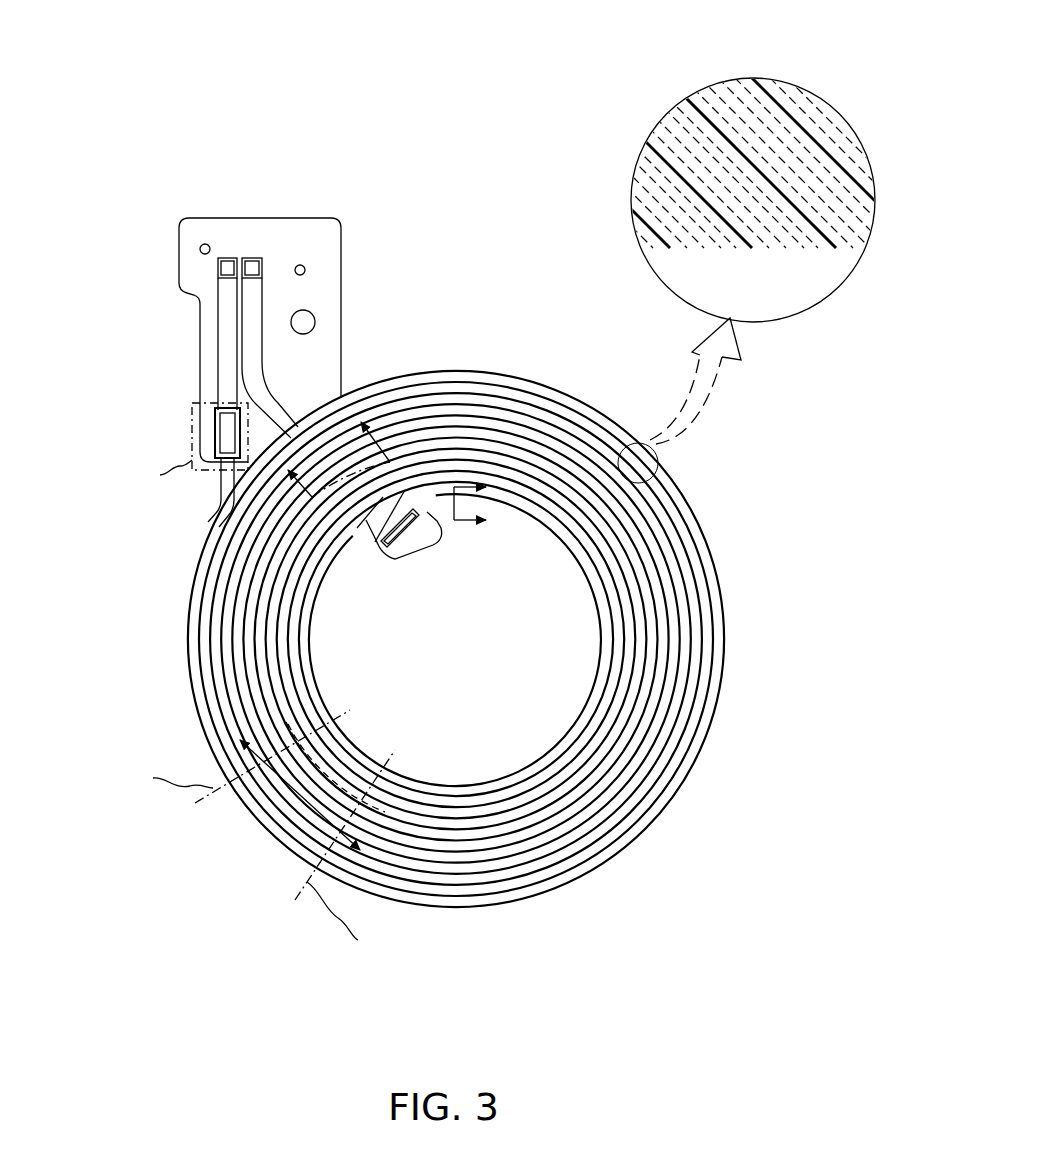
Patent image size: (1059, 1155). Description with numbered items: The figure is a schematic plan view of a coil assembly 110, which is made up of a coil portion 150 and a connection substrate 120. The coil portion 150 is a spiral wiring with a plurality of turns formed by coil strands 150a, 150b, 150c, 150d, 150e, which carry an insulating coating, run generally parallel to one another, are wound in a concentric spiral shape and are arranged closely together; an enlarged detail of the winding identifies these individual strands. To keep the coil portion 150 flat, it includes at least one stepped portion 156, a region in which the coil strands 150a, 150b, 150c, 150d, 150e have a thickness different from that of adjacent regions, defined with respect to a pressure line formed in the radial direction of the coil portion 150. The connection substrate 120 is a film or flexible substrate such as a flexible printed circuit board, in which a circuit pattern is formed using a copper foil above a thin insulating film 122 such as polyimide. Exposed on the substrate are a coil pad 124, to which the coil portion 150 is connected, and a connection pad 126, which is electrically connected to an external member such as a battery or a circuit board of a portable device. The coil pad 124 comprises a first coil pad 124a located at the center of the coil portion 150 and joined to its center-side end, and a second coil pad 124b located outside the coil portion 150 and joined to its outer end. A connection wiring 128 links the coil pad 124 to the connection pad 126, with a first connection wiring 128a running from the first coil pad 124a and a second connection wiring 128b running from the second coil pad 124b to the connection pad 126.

The coil assembly 110 is at (487, 182).
The connection substrate 120 is at (318, 202).
The insulating film 122 is at (343, 320).
The coil pad 124 is at (245, 510).
The first coil pad 124a is at (392, 558).
The second coil pad 124b is at (217, 434).
The connection pad 126 is at (251, 257).
The connection wiring 128 is at (108, 312).
The first connection wiring 128a is at (248, 354).
The second connection wiring 128b is at (222, 318).
The coil portion 150 is at (738, 601).
The coil strand 150a is at (690, 98).
The coil strand 150b is at (703, 92).
The coil strand 150c is at (718, 88).
The coil strand 150d is at (742, 82).
The coil strand 150e is at (766, 92).
The stepped portion 156 is at (308, 868).